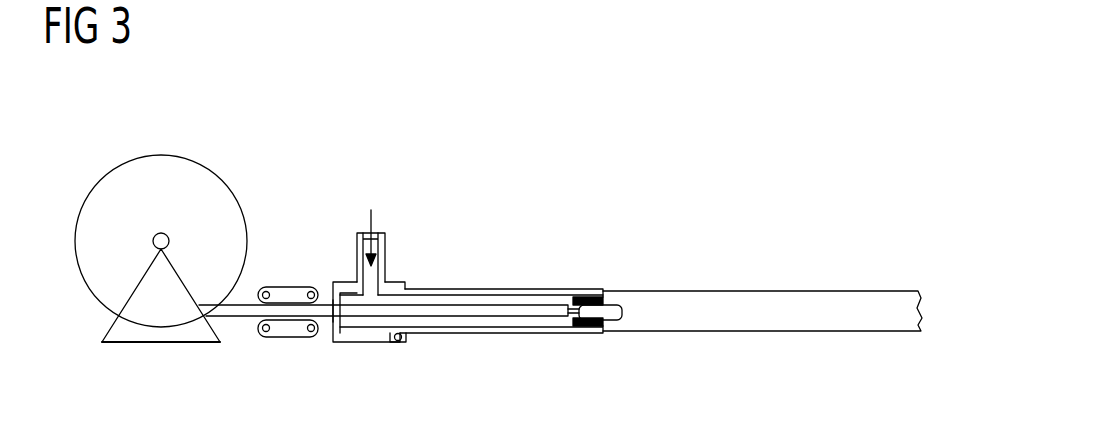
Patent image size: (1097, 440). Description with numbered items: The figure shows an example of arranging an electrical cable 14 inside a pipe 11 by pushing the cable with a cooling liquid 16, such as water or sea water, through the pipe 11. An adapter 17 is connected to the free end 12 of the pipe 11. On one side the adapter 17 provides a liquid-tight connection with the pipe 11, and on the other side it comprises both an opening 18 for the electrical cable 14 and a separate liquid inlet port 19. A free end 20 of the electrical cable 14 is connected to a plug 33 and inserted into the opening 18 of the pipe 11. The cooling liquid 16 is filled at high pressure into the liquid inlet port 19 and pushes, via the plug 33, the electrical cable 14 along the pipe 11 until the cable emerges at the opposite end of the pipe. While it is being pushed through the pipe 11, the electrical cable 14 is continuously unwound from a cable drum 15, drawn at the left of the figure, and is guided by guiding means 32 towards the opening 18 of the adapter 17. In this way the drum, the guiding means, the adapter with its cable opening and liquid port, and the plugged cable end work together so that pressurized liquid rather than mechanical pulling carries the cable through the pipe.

The pipe 11 is at (753, 332).
The free end 12 is at (398, 343).
The electrical cable 14 is at (237, 320).
The cable drum 15 is at (162, 166).
The cooling liquid 16 is at (371, 216).
The adapter 17 is at (347, 343).
The opening 18 is at (330, 300).
The liquid inlet port 19 is at (362, 233).
The free end 20 is at (576, 327).
The guiding means 32 is at (288, 338).
The plug 33 is at (593, 306).